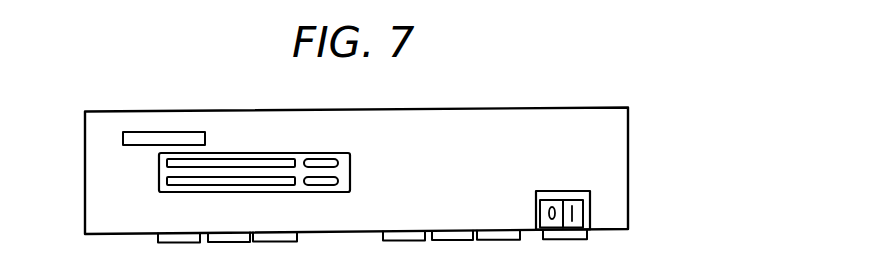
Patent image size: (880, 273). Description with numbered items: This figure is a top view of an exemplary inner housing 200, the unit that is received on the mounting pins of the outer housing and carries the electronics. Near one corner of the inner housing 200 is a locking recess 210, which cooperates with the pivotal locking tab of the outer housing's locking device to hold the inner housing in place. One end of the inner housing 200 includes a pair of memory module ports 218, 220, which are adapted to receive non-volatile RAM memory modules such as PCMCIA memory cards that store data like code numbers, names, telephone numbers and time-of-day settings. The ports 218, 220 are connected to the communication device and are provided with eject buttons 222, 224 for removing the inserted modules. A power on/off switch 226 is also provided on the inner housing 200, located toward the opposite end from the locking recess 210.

The inner housing 200 is at (684, 131).
The locking recess 210 is at (123, 142).
The memory module port 218 is at (327, 163).
The memory module port 220 is at (327, 181).
The eject button 222 is at (240, 163).
The eject button 224 is at (247, 178).
The power on/off switch 226 is at (558, 203).